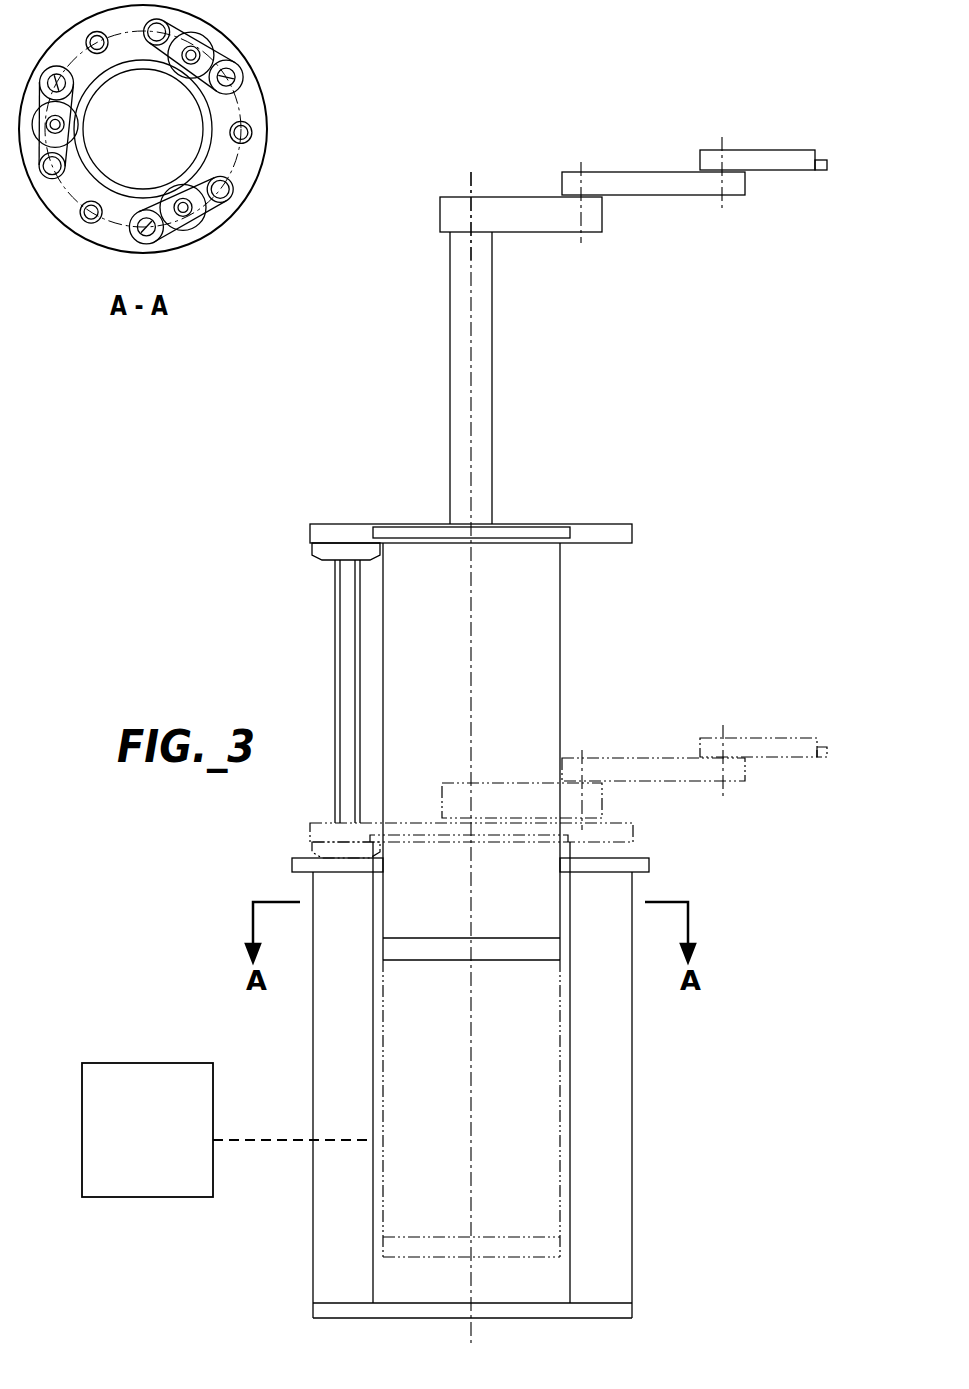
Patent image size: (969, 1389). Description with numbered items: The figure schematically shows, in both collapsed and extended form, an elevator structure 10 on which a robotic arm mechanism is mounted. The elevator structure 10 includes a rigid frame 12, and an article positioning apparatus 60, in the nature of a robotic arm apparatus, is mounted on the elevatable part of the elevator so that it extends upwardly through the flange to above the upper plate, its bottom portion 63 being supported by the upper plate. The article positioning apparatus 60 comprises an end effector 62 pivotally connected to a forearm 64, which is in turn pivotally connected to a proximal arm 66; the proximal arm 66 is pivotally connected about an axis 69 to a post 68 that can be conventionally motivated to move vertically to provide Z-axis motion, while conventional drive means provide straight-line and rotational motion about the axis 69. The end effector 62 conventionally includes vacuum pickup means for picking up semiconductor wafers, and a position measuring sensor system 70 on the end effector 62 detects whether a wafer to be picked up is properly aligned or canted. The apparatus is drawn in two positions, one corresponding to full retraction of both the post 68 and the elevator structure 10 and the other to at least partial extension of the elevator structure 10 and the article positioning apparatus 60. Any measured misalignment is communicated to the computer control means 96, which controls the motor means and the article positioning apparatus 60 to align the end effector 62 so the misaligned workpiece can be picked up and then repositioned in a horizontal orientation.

The elevator structure 10 is at (581, 655).
The rigid frame 12 is at (372, 1236).
The article positioning apparatus 60 is at (622, 317).
The end effector 62 is at (780, 150).
The bottom portion 63 is at (494, 520).
The forearm 64 is at (640, 171).
The proximal arm 66 is at (532, 196).
The post 68 is at (450, 388).
The axis 69 is at (468, 194).
The position measuring sensor system 70 is at (828, 165).
The computer control means 96 is at (160, 1139).